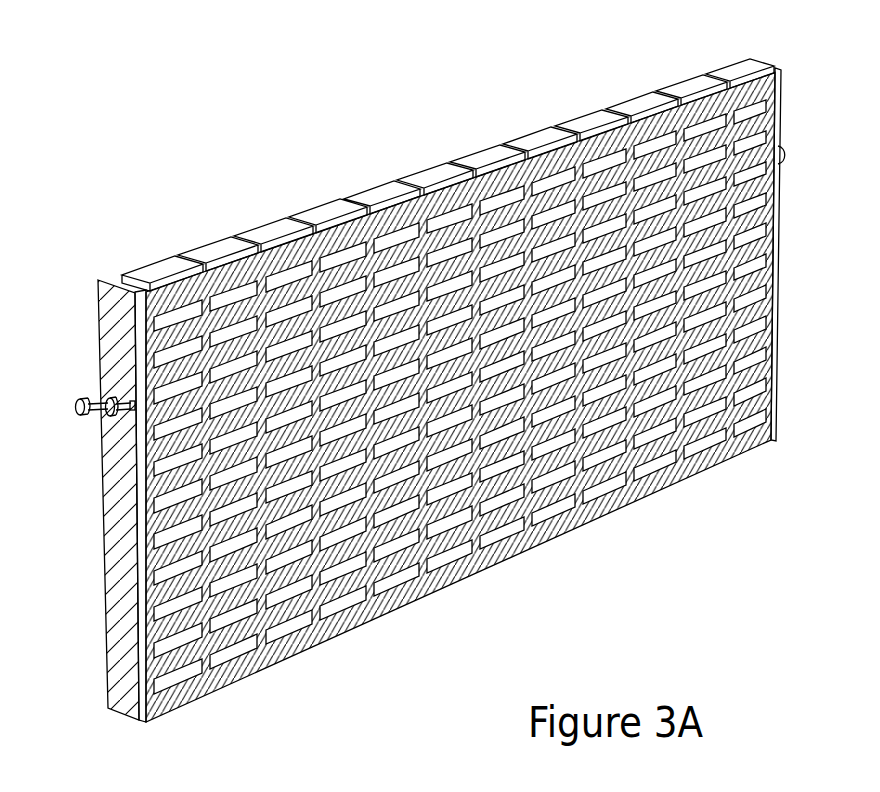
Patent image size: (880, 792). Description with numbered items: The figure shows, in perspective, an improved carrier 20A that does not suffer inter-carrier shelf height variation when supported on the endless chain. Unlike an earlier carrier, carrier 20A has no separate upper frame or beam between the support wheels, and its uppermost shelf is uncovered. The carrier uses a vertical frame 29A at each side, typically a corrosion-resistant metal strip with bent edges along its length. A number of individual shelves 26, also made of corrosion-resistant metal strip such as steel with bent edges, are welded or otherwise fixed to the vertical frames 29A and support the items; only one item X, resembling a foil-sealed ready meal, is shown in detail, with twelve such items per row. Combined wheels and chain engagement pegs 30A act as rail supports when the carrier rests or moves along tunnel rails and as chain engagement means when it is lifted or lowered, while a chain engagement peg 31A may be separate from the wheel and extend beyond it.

The improved carrier 20A is at (207, 97).
The shelf 26 is at (380, 612).
The vertical frame 29A is at (97, 312).
The combined wheel and chain engagement peg 30A is at (80, 400).
The chain engagement peg 31A is at (128, 415).
The item X is at (137, 268).